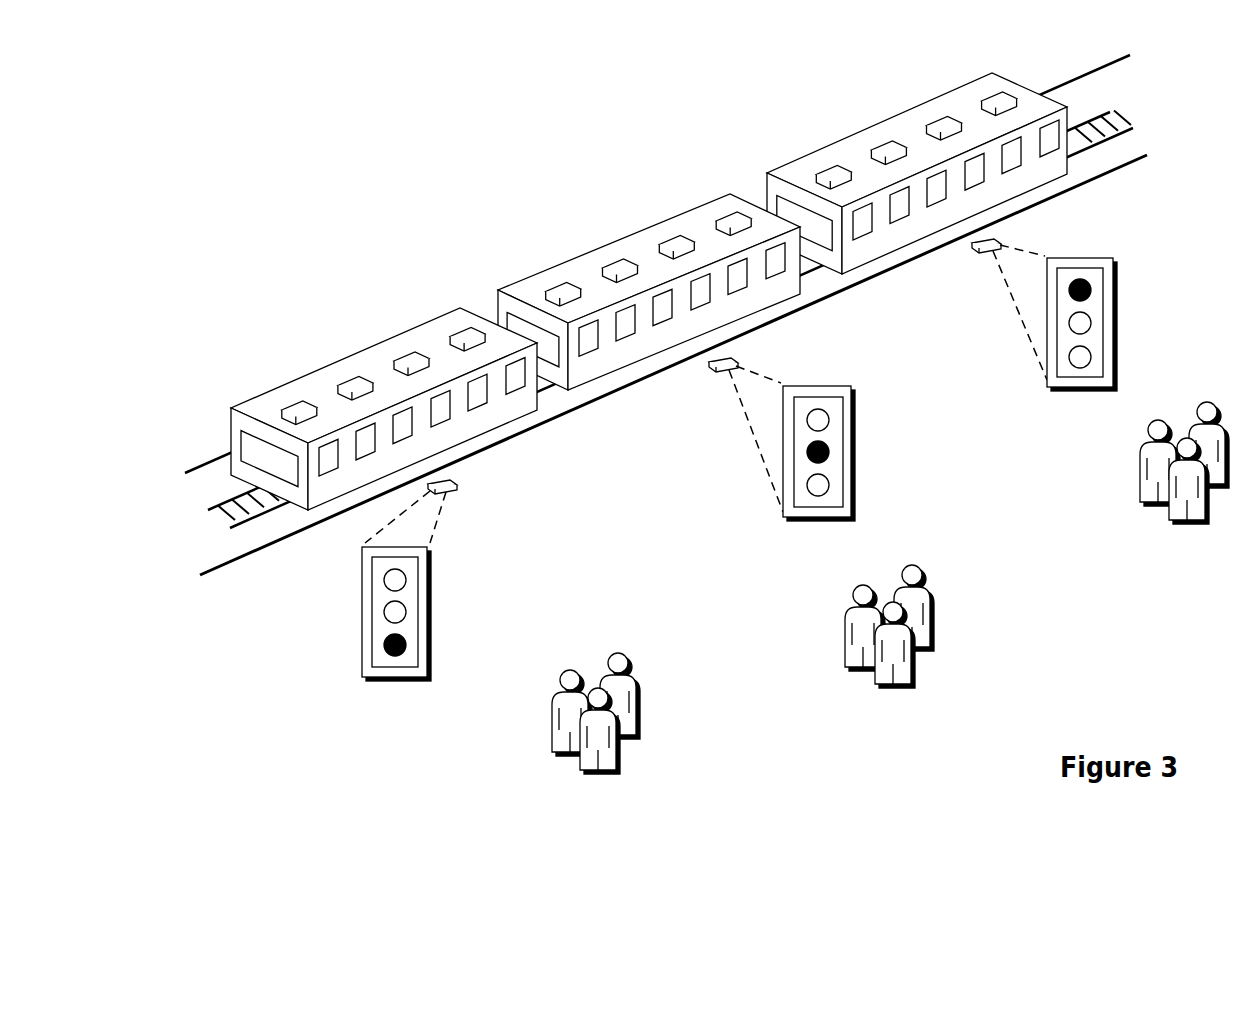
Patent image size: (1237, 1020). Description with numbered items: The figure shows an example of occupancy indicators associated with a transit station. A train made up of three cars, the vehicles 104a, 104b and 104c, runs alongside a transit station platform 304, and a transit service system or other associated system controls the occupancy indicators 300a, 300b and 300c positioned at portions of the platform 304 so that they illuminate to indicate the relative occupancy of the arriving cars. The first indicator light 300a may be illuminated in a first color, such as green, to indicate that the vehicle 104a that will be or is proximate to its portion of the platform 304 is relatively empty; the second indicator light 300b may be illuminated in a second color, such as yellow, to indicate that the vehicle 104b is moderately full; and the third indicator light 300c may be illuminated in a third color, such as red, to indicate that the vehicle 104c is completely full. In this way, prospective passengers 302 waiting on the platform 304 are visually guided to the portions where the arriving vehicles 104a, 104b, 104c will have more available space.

The vehicle 104a is at (337, 360).
The vehicle 104b is at (602, 244).
The vehicle 104c is at (862, 131).
The first indicator light 300a is at (460, 486).
The second indicator light 300b is at (718, 370).
The third indicator light 300c is at (973, 250).
The prospective passengers 302 is at (843, 634).
The platform 304 is at (396, 745).